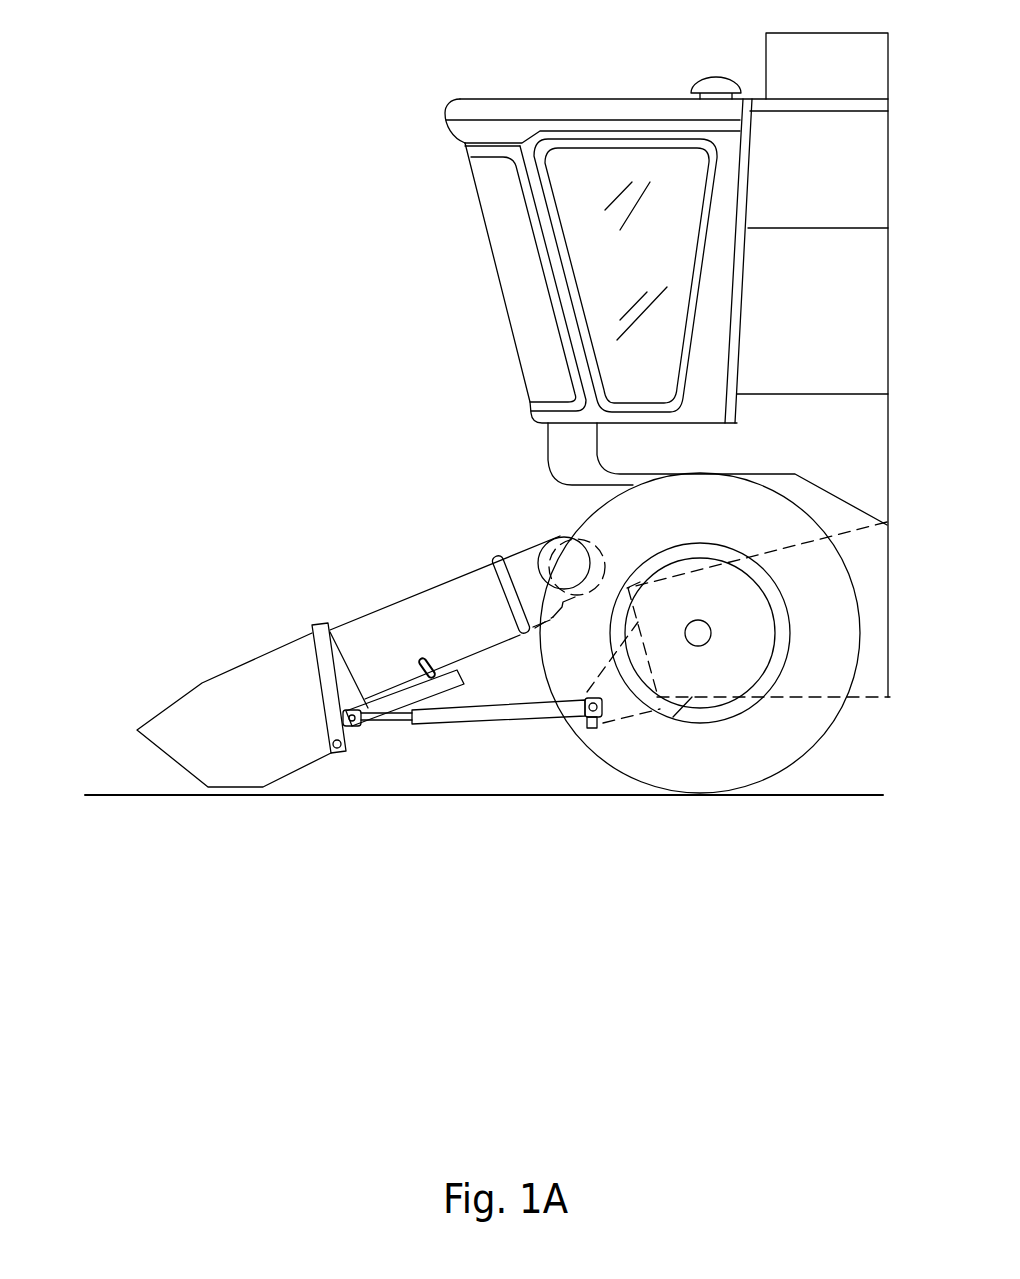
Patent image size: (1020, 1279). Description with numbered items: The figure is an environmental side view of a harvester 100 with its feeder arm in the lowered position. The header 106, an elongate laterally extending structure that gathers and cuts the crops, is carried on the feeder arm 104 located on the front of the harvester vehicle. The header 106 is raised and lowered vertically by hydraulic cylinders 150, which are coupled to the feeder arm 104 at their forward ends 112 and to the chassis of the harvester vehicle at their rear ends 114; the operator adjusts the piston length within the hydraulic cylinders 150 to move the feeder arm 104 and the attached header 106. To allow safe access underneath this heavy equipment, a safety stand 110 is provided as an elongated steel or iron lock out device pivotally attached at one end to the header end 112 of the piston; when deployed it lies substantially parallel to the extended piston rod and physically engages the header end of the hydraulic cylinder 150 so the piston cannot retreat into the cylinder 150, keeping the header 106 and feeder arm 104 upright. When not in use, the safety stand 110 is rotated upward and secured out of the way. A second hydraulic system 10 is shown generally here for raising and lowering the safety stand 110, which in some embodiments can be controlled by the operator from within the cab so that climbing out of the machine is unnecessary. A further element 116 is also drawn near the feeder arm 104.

The harvester 100 is at (398, 43).
The feeder arm 104 is at (407, 612).
The header 106 is at (268, 652).
The second hydraulic system 10 is at (426, 657).
The safety stand 110 is at (390, 705).
The forward ends 112 is at (358, 727).
The rear ends 114 is at (595, 730).
The hose 116 is at (570, 563).
The hydraulic cylinders 150 is at (530, 712).